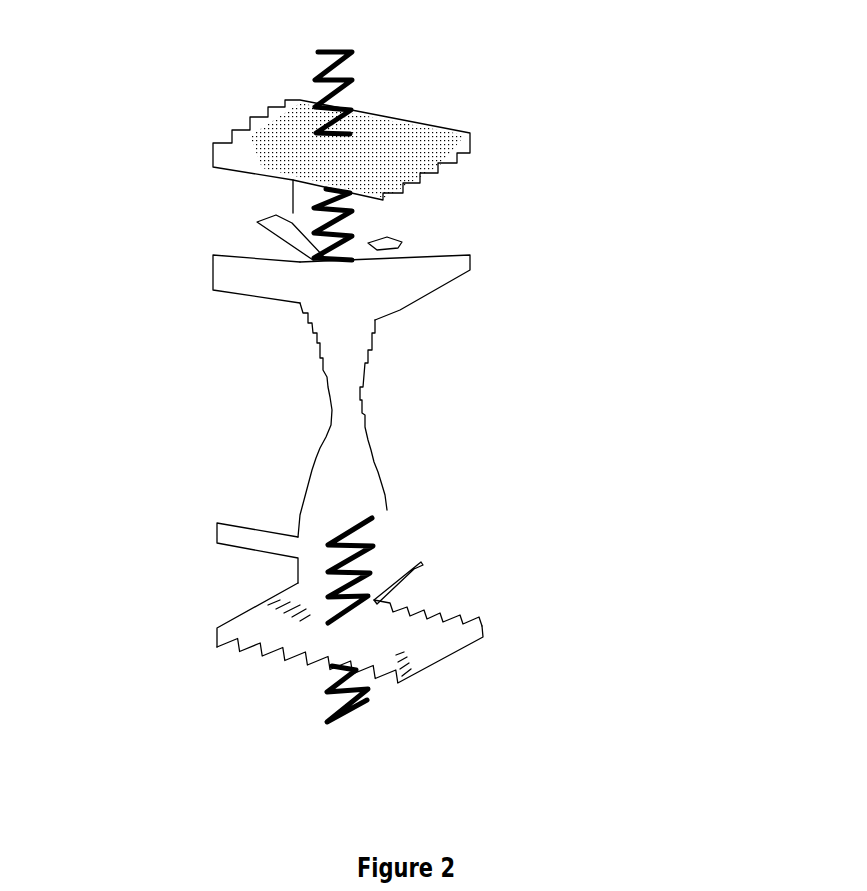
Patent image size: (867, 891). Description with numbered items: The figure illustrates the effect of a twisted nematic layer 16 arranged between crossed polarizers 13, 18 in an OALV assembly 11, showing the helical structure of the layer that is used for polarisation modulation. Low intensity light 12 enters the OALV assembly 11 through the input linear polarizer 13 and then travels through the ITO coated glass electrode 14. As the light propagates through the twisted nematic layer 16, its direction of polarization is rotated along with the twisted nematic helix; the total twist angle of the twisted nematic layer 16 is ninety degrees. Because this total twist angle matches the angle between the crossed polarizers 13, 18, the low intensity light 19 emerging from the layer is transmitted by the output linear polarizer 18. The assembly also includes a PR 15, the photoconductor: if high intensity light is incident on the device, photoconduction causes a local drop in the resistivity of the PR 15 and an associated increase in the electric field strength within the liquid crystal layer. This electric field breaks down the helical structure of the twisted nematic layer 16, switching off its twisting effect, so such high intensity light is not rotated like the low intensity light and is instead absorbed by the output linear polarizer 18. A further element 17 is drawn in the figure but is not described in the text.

The OALV assembly 11 is at (527, 114).
The low intensity light 12 is at (318, 47).
The input linear polarizer 13 is at (215, 140).
The ITO coated glass electrode 14 is at (465, 235).
The PR 15 is at (217, 298).
The twisted nematic layer 16 is at (320, 386).
The lower spring 17 is at (465, 528).
The output linear polarizer 18 is at (217, 637).
The low intensity light 19 is at (340, 713).